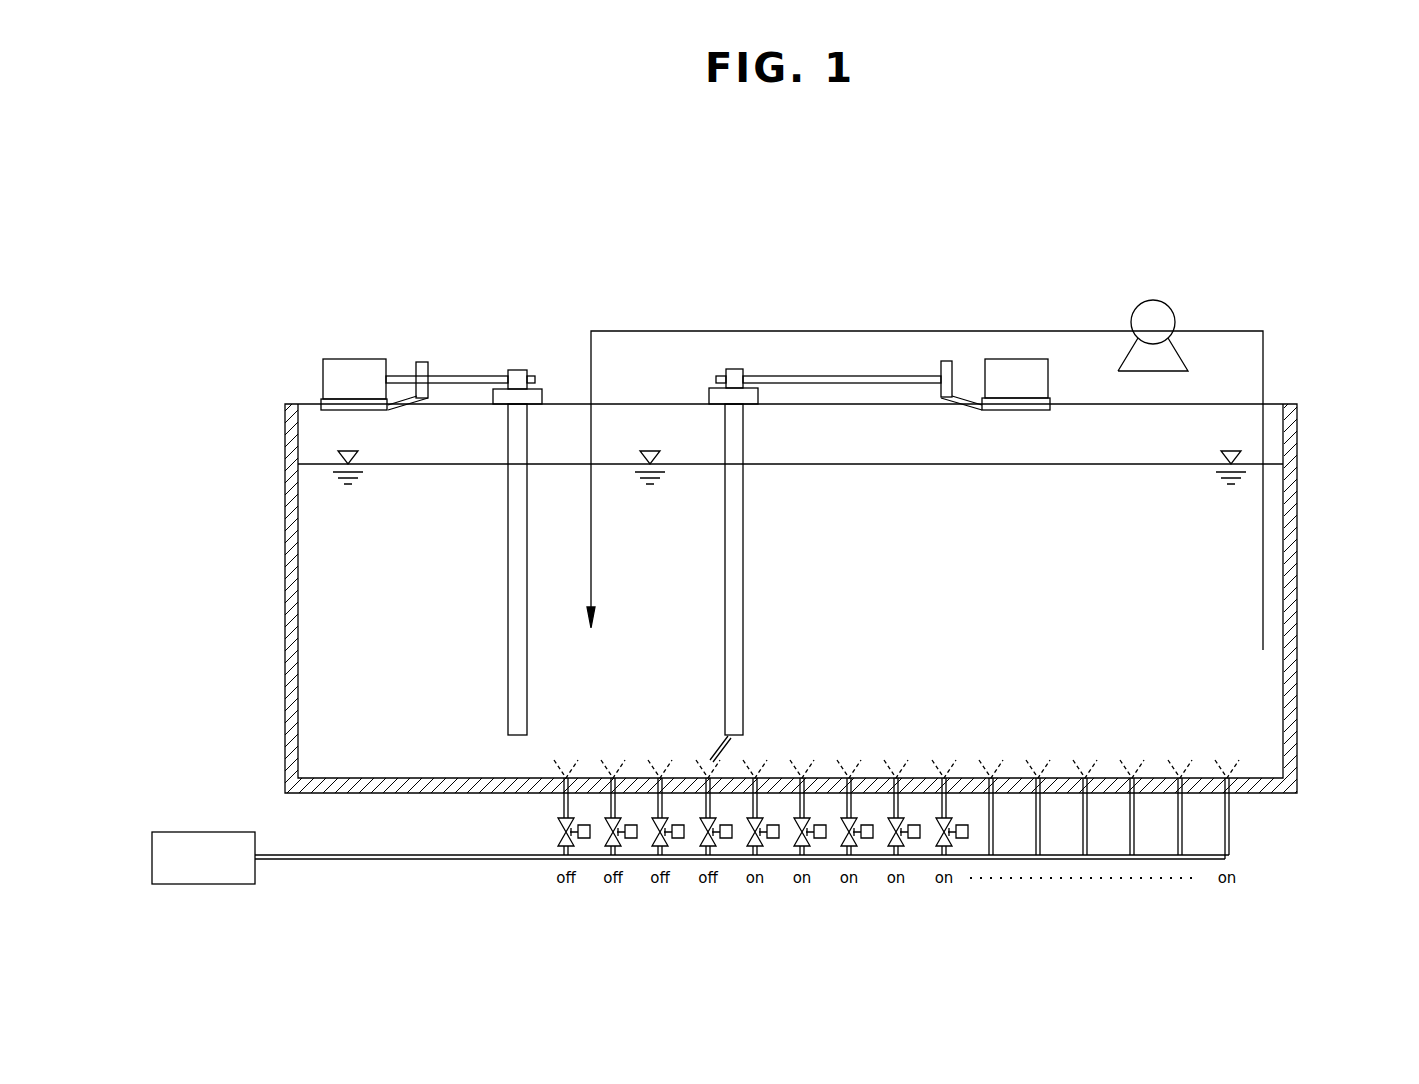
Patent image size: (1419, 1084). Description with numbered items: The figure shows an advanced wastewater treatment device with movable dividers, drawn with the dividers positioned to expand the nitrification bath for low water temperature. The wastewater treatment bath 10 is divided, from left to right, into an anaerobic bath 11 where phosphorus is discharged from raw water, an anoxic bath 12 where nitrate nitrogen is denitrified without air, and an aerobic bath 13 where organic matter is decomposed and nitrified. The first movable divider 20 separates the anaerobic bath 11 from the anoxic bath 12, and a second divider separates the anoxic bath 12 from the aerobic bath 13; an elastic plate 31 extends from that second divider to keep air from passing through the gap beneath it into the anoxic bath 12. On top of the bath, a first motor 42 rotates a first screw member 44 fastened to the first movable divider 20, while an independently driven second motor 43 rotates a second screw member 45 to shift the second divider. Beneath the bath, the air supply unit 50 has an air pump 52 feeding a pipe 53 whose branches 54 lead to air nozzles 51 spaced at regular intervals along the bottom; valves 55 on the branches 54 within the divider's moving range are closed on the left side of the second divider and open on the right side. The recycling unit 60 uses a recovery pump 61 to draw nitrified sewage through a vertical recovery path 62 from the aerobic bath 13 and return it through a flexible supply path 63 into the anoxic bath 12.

The wastewater treatment bath 10 is at (1308, 450).
The anaerobic bath 11 is at (389, 621).
The anoxic bath 12 is at (672, 621).
The aerobic bath 13 is at (1023, 621).
The first movable divider 20 is at (508, 670).
The elastic plate 31 is at (712, 748).
The first motor 42 is at (355, 358).
The second motor 43 is at (1015, 358).
The first screw member 44 is at (468, 377).
The second screw member 45 is at (830, 377).
The air supply unit 50 is at (186, 808).
The air nozzles 51 is at (1036, 760).
The air pump 52 is at (230, 830).
The pipe 53 is at (476, 862).
The branches 54 is at (698, 802).
The valves 55 is at (880, 845).
The recycling unit 60 is at (975, 430).
The recovery pump 61 is at (1172, 308).
The recovery path 62 is at (1265, 367).
The supply path 63 is at (733, 330).